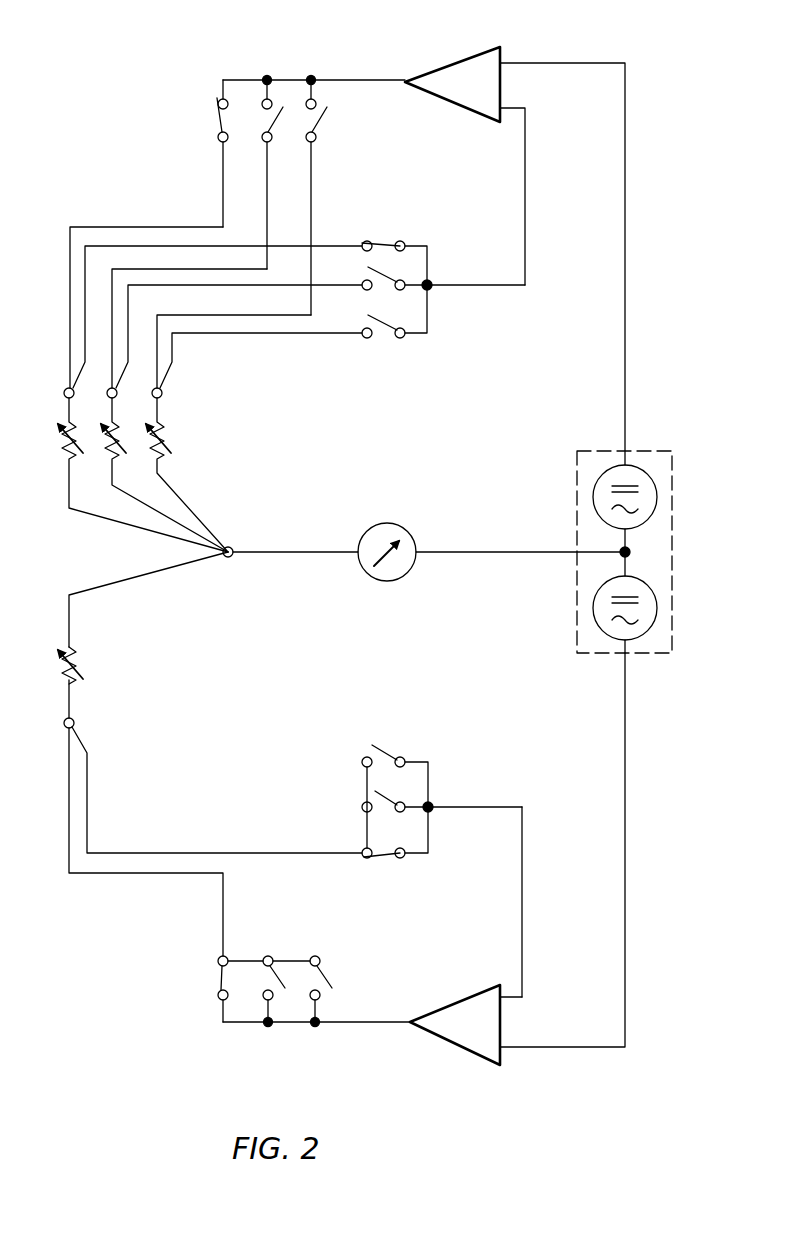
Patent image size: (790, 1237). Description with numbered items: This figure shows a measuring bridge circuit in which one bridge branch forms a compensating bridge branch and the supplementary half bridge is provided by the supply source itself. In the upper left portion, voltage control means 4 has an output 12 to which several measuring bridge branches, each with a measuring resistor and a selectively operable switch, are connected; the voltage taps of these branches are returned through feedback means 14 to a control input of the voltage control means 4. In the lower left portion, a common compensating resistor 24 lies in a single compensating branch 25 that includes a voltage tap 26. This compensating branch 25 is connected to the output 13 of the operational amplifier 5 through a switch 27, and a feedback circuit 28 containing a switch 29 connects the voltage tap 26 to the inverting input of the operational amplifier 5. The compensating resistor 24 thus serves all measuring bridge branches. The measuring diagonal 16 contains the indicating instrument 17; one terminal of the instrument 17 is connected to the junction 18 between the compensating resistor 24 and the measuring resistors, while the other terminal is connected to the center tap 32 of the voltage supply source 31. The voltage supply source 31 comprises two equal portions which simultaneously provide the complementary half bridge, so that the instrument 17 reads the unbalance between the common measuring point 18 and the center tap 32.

The voltage control means 4 is at (467, 68).
The voltage control means 5 is at (452, 1035).
The output of the voltage control means 12 is at (378, 80).
The output of the voltage control means 13 is at (378, 1020).
The feedback means 14 is at (410, 170).
The measuring diagonal 16 is at (303, 550).
The indicating instrument 17 is at (410, 535).
The common measuring point 18 is at (232, 547).
The compensating resistor 24 is at (76, 652).
The compensating branch 25 is at (66, 808).
The voltage tap 26 is at (76, 722).
The switch 27 is at (220, 968).
The feedback circuit 28 is at (233, 852).
The switch 29 is at (382, 860).
The voltage supply source 31 is at (660, 450).
The center tap 32 is at (632, 552).